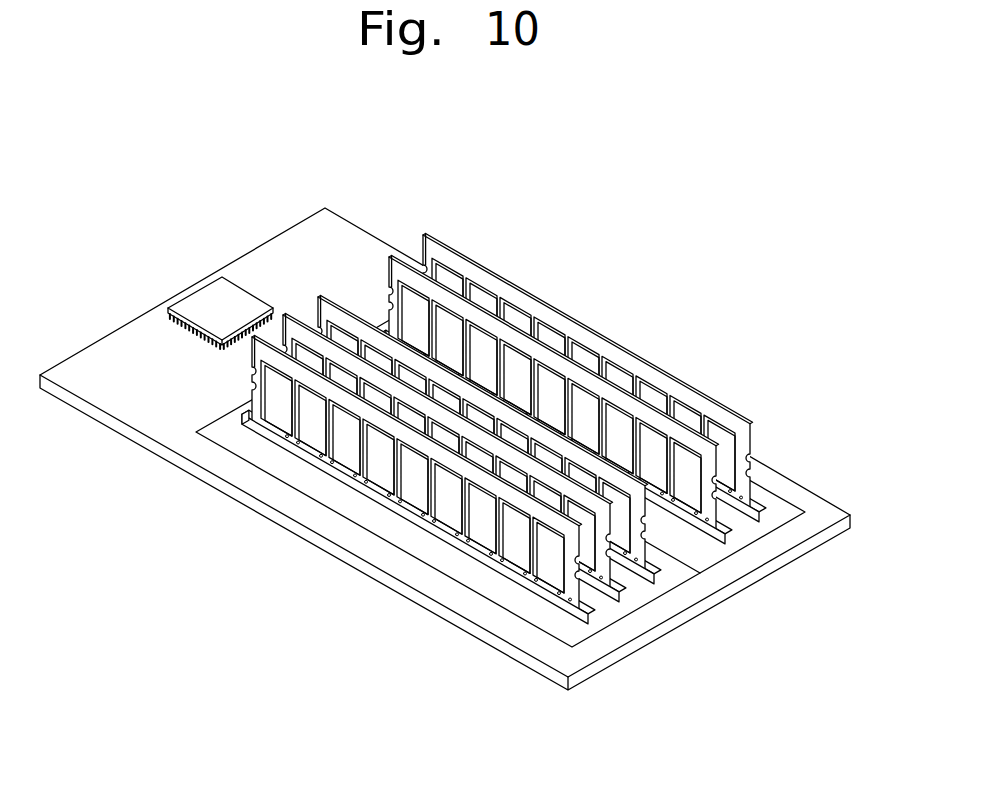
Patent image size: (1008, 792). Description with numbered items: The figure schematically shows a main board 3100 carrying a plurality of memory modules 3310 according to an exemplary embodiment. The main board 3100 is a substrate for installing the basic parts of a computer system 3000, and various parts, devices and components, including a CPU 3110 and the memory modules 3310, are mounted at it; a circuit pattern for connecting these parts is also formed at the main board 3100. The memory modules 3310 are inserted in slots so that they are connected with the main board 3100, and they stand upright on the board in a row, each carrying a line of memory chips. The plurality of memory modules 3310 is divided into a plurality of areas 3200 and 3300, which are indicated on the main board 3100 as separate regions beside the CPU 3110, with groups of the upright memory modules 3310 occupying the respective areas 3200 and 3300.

The computer system 3000 is at (774, 147).
The main board 3100 is at (393, 578).
The CPU 3110 is at (195, 290).
The area 3200 is at (612, 679).
The area 3300 is at (750, 599).
The memory module 3310 is at (586, 320).